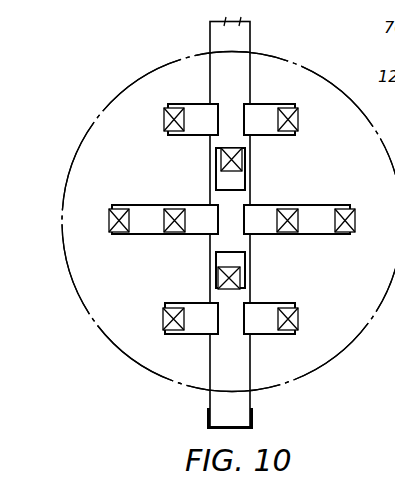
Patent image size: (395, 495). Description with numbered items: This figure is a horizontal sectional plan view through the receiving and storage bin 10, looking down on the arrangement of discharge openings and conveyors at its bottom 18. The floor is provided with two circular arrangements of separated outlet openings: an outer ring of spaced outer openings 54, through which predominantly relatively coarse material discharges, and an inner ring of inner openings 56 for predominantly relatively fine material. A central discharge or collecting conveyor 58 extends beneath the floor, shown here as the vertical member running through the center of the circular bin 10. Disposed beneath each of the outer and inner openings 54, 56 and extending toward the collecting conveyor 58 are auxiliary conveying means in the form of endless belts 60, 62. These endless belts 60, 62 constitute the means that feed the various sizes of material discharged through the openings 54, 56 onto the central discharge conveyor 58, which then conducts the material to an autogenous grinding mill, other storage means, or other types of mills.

The cylindrical container or bin 10 is at (76, 156).
The bottom 18 is at (82, 270).
The outer openings 54 is at (165, 117).
The inner openings 56 is at (221, 160).
The central discharge conveyor 58 is at (245, 42).
The endless belt 60 is at (140, 208).
The endless belt 62 is at (200, 113).